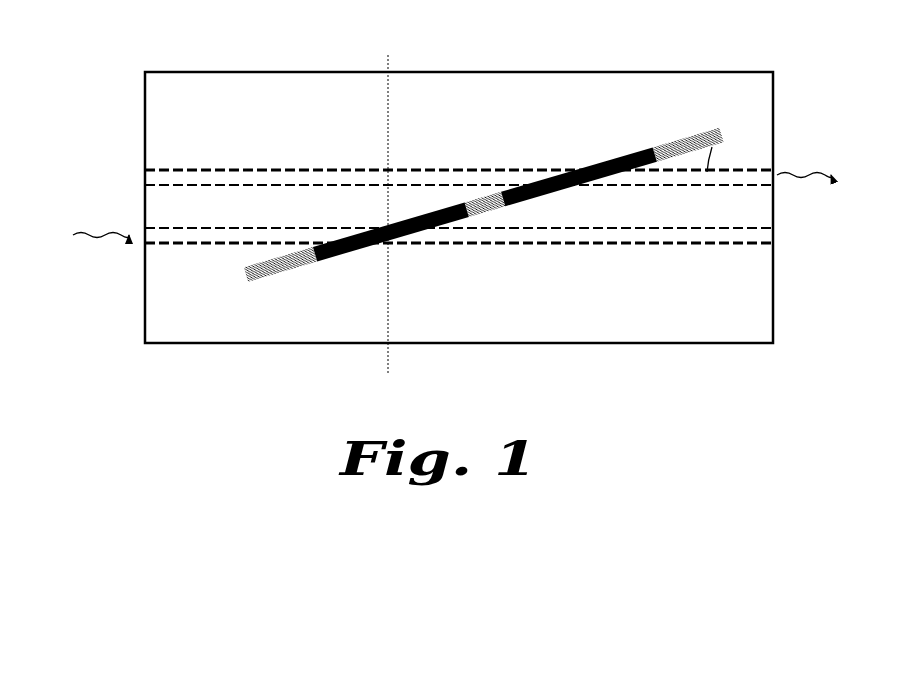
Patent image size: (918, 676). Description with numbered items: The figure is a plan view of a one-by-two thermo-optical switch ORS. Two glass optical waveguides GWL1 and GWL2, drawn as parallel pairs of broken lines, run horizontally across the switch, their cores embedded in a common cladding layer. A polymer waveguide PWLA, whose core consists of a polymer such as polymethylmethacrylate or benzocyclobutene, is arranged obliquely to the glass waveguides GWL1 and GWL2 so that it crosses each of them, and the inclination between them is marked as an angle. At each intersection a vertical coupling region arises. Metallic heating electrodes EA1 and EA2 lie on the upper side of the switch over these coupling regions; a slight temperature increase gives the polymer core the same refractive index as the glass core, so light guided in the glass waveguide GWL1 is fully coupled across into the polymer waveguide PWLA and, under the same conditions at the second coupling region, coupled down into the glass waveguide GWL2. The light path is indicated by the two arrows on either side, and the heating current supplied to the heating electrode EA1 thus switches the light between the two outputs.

The switch ORS is at (545, 52).
The glass waveguide GWL2 is at (172, 170).
The glass waveguide GWL1 is at (173, 243).
The polymer waveguide PWLA is at (252, 285).
The heating electrode EA1 is at (412, 242).
The heating electrode EA2 is at (590, 188).